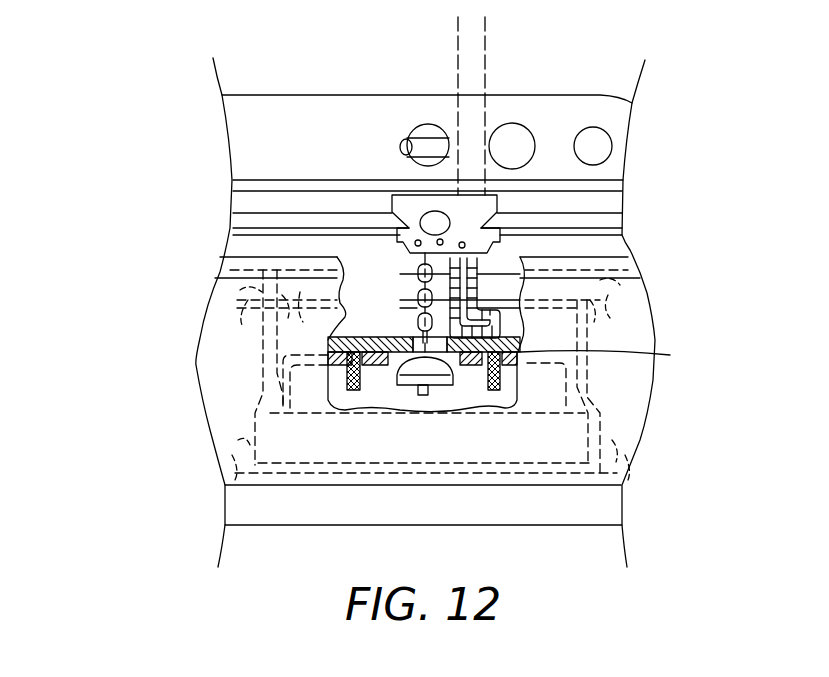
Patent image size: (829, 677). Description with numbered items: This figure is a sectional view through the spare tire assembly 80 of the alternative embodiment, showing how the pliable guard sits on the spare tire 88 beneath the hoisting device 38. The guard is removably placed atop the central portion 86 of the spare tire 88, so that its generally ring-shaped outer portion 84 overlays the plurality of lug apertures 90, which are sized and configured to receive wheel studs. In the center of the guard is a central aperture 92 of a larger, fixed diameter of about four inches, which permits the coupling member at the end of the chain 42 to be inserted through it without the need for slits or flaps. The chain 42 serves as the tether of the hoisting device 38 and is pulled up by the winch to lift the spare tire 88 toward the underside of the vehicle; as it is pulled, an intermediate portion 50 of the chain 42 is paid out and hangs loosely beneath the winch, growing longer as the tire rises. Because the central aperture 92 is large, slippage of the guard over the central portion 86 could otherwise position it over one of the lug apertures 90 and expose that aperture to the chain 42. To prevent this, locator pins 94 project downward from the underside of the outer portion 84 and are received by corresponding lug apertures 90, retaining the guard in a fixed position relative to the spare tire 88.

The spare tire assembly 80 is at (105, 85).
The hoisting device 38 is at (403, 210).
The chain 42 is at (418, 275).
The intermediate portion 50 is at (480, 298).
The outer portion 84 is at (328, 343).
The central portion 86 is at (540, 365).
The spare tire 88 is at (198, 388).
The lug apertures 90 is at (610, 355).
The central aperture 92 is at (412, 340).
The locator pins 94 is at (358, 390).